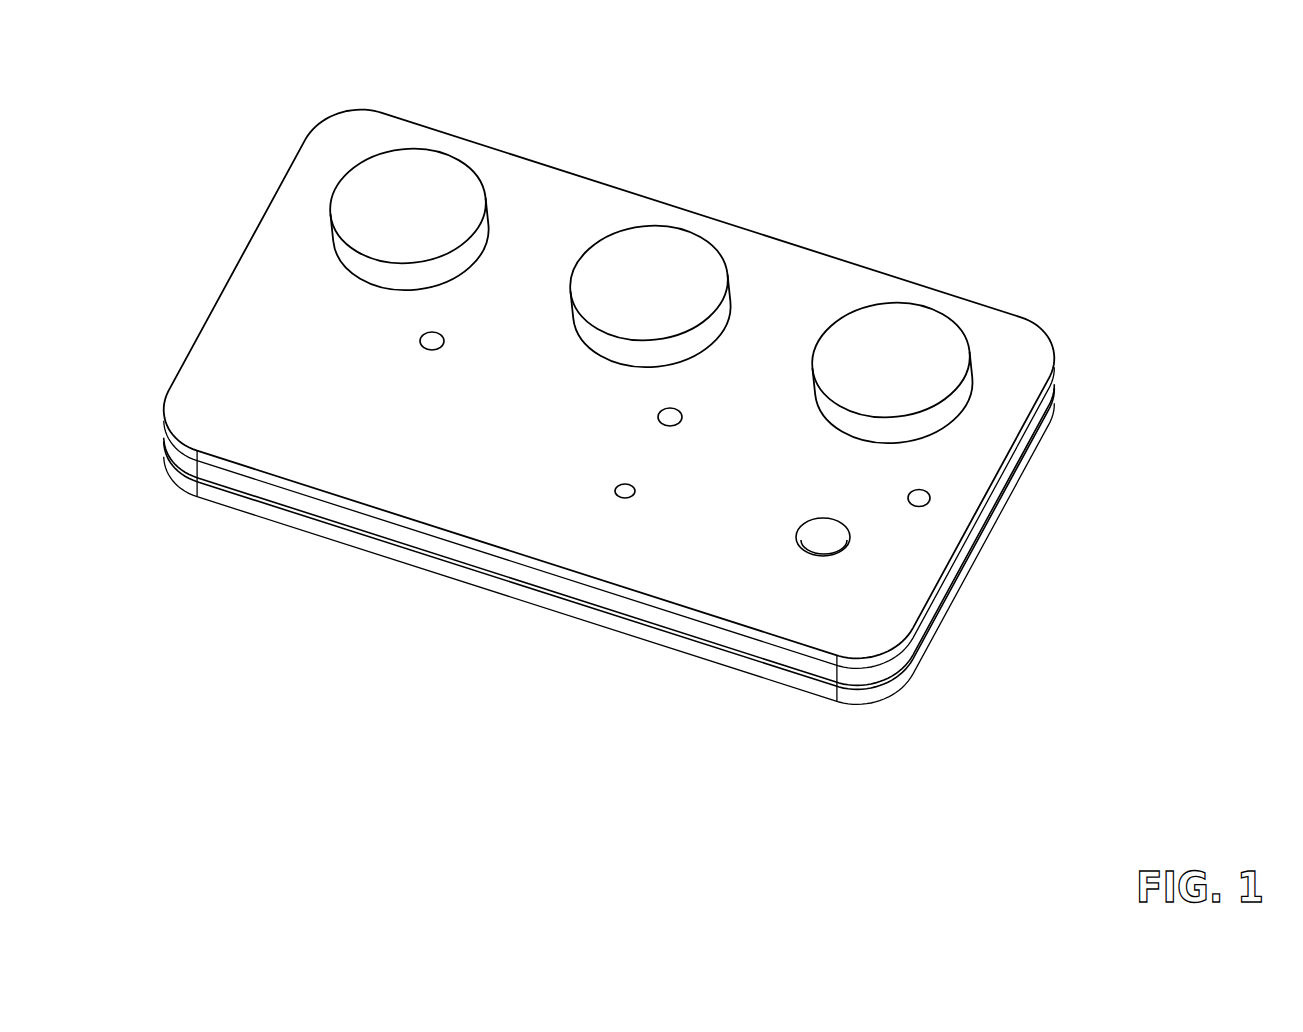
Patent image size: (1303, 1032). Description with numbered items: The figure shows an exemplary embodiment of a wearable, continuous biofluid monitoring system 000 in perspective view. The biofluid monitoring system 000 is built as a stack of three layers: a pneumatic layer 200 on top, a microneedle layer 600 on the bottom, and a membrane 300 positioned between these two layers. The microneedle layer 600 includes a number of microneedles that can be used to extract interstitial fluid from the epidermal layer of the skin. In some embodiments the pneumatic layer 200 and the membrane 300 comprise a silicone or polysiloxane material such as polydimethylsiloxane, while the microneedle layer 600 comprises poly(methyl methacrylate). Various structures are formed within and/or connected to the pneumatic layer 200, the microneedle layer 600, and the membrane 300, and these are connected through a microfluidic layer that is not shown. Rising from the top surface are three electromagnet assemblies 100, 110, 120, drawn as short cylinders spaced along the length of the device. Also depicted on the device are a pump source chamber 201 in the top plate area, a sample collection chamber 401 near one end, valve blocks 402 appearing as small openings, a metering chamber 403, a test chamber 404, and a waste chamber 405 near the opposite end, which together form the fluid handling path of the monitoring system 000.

The wearable continuous biofluid monitoring system 000 is at (652, 444).
The electromagnet assembly 100 is at (428, 163).
The electromagnet assembly 110 is at (695, 262).
The electromagnet assembly 120 is at (895, 355).
The pneumatic layer 200 is at (1018, 447).
The pump source chamber 201 is at (500, 263).
The membrane 300 is at (997, 503).
The microneedle layer 600 is at (965, 563).
The sample collection chamber 401 is at (325, 432).
The valve block 402 is at (427, 435).
The metering chamber 403 is at (527, 473).
The test chamber 404 is at (710, 527).
The waste chamber 405 is at (848, 598).